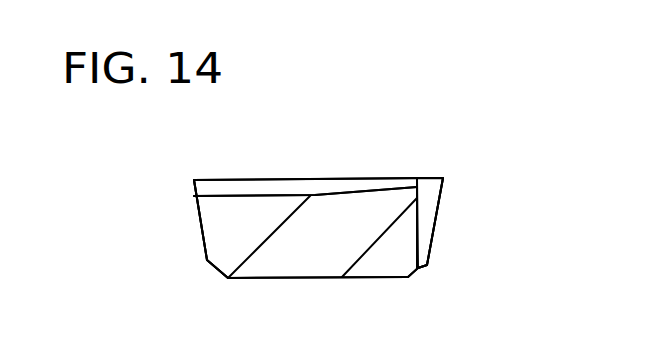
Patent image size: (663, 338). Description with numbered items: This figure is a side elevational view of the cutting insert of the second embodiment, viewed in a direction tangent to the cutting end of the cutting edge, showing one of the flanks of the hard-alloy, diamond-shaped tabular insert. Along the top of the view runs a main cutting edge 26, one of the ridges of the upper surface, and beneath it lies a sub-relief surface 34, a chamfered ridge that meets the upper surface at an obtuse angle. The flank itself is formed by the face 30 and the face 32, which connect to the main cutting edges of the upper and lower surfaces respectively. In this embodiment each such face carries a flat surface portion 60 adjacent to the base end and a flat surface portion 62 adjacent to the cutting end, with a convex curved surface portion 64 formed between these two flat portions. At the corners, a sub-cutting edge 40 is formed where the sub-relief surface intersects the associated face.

The main cutting edge 26 is at (194, 180).
The face 30 is at (427, 207).
The face 32 is at (343, 218).
The convex curved surface portion 64 is at (305, 191).
The sub-relief surface 34 is at (290, 185).
The sub-cutting edge 40 is at (220, 272).
The flat surface portion 60 is at (383, 258).
The flat surface portion 62 is at (212, 212).